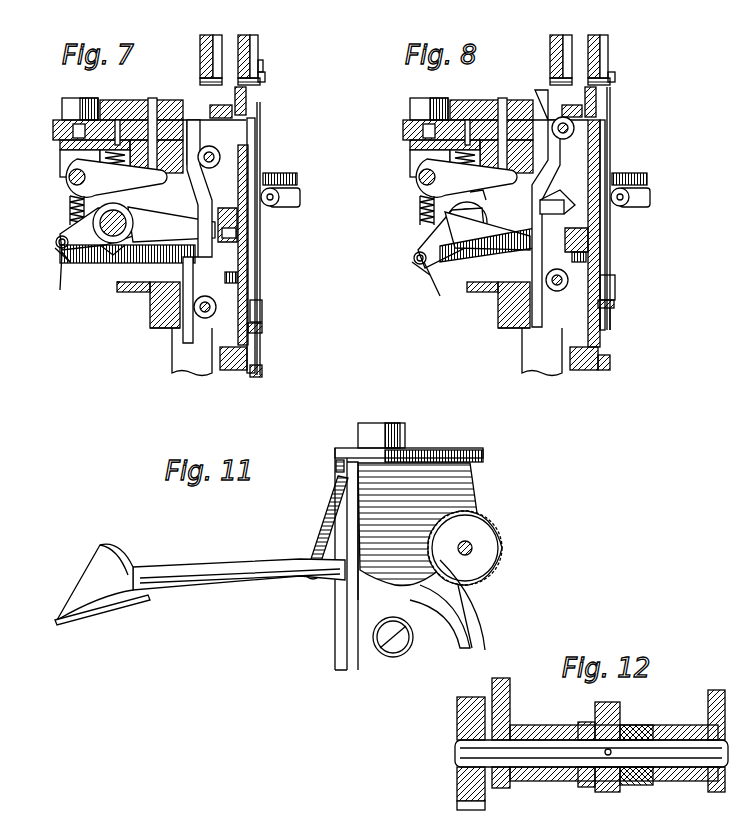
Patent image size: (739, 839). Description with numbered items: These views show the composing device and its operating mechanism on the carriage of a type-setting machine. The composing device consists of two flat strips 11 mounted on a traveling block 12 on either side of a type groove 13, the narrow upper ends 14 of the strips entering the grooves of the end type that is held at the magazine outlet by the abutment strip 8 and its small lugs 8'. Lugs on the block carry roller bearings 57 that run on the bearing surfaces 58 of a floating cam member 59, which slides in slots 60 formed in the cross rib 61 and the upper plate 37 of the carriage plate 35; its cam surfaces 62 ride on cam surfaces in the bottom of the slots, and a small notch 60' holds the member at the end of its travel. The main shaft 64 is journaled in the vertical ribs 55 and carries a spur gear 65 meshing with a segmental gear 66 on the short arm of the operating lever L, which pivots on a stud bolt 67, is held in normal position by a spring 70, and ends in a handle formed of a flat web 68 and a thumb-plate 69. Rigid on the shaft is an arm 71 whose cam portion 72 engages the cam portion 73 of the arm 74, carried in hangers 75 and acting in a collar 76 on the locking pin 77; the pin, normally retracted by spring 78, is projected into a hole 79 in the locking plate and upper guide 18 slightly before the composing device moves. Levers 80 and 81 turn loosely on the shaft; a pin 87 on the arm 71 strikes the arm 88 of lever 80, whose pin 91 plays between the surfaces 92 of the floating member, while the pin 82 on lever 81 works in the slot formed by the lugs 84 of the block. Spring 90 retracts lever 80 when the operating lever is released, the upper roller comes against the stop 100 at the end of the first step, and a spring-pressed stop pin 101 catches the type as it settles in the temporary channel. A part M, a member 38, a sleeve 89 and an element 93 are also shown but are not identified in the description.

In FIG. 7, the abutment strip 8 is at (240, 68).
In FIG. 8, the abutment strip 8 is at (566, 60).
In FIG. 7, the abutment lugs 8' is at (281, 65).
In FIG. 7, the mechanism post M is at (250, 68).
In FIG. 8, the mechanism post M is at (600, 66).
In FIG. 7, the stop 100 is at (220, 106).
In FIG. 7, the upper ends 14 is at (260, 104).
In FIG. 8, the upper ends 14 is at (610, 96).
In FIG. 7, the type groove 13 is at (255, 136).
In FIG. 8, the type groove 13 is at (606, 168).
In FIG. 7, the traveling block 12 is at (246, 162).
In FIG. 8, the traveling block 12 is at (598, 160).
In FIG. 7, the flat strips 11 is at (255, 258).
In FIG. 8, the flat strips 11 is at (604, 232).
In FIG. 7, the locking plate and upper guide 18 is at (120, 102).
In FIG. 8, the locking plate and upper guide 18 is at (466, 102).
In FIG. 7, the collar 76 is at (66, 108).
In FIG. 8, the collar 76 is at (414, 108).
In FIG. 7, the upper plate 37 is at (56, 130).
In FIG. 8, the upper plate 37 is at (406, 130).
In FIG. 11, the upper plate 37 is at (455, 452).
In FIG. 7, the hangers 75 is at (62, 150).
In FIG. 8, the hangers 75 is at (412, 150).
In FIG. 7, the spring 78 is at (108, 160).
In FIG. 8, the spring 78 is at (458, 160).
In FIG. 7, the hole 79 is at (152, 100).
In FIG. 8, the hole 79 is at (502, 100).
In FIG. 7, the locking pin 77 is at (118, 122).
In FIG. 8, the locking pin 77 is at (468, 122).
In FIG. 7, the arm 74 is at (68, 180).
In FIG. 8, the arm 74 is at (418, 180).
In FIG. 7, the cam portion 73 is at (68, 200).
In FIG. 8, the cam portion 73 is at (418, 200).
In FIG. 7, the cam portion 72 is at (70, 212).
In FIG. 8, the cam portion 72 is at (420, 212).
In FIG. 7, the spring 90 is at (65, 236).
In FIG. 8, the spring 90 is at (430, 244).
In FIG. 7, the lever 81 is at (165, 225).
In FIG. 8, the lever 81 is at (462, 260).
In FIG. 12, the lever 81 is at (640, 786).
In FIG. 7, the main operating shaft 64 is at (100, 240).
In FIG. 8, the main operating shaft 64 is at (450, 225).
In FIG. 11, the main operating shaft 64 is at (470, 546).
In FIG. 12, the main operating shaft 64 is at (468, 750).
In FIG. 7, the pin 87 is at (56, 244).
In FIG. 8, the pin 87 is at (414, 262).
In FIG. 7, the arm 88 is at (62, 258).
In FIG. 8, the arm 88 is at (418, 270).
In FIG. 7, the arm 71 is at (60, 290).
In FIG. 8, the arm 71 is at (430, 284).
In FIG. 12, the arm 71 is at (608, 792).
In FIG. 7, the floating cam member 59 is at (150, 262).
In FIG. 8, the floating cam member 59 is at (500, 258).
In FIG. 7, the surfaces 92 is at (110, 256).
In FIG. 8, the surfaces 92 is at (502, 212).
In FIG. 7, the lever 80 is at (140, 286).
In FIG. 8, the lever 80 is at (488, 288).
In FIG. 12, the lever 80 is at (586, 788).
In FIG. 7, the cross rib 61 is at (160, 300).
In FIG. 8, the cross rib 61 is at (508, 302).
In FIG. 7, the notch 60' is at (145, 331).
In FIG. 8, the notch 60' is at (495, 333).
In FIG. 7, the slots 60 is at (157, 217).
In FIG. 7, the cam surfaces 62 is at (190, 343).
In FIG. 8, the cam surfaces 62 is at (522, 338).
In FIG. 7, the bearing surfaces 58 is at (209, 146).
In FIG. 8, the bearing surfaces 58 is at (564, 139).
In FIG. 7, the roller bearings 57 is at (214, 150).
In FIG. 8, the roller bearings 57 is at (574, 128).
In FIG. 7, the stop pin 101 is at (262, 328).
In FIG. 8, the stop pin 101 is at (614, 306).
In FIG. 7, the lugs 84 is at (237, 222).
In FIG. 8, the lugs 84 is at (590, 236).
In FIG. 7, the pin 82 is at (236, 233).
In FIG. 8, the pin 82 is at (542, 232).
In FIG. 7, the pin 91 is at (225, 274).
In FIG. 8, the pin 91 is at (600, 262).
In FIG. 7, the lever 93 is at (300, 198).
In FIG. 8, the lever 93 is at (650, 198).
In FIG. 11, the block 38 is at (392, 438).
In FIG. 11, the carriage plate 35 is at (355, 632).
In FIG. 11, the vertical ribs 55 is at (465, 508).
In FIG. 12, the vertical ribs 55 is at (502, 702).
In FIG. 11, the spur gear 65 is at (480, 562).
In FIG. 12, the spur gear 65 is at (460, 784).
In FIG. 11, the segmental gear 66 is at (472, 618).
In FIG. 11, the stud bolt 67 is at (400, 646).
In FIG. 11, the spring 70 is at (330, 515).
In FIG. 11, the operating lever L is at (239, 574).
In FIG. 11, the web 68 is at (80, 580).
In FIG. 11, the thumb-plate 69 is at (98, 622).
In FIG. 12, the sleeve 89 is at (540, 730).